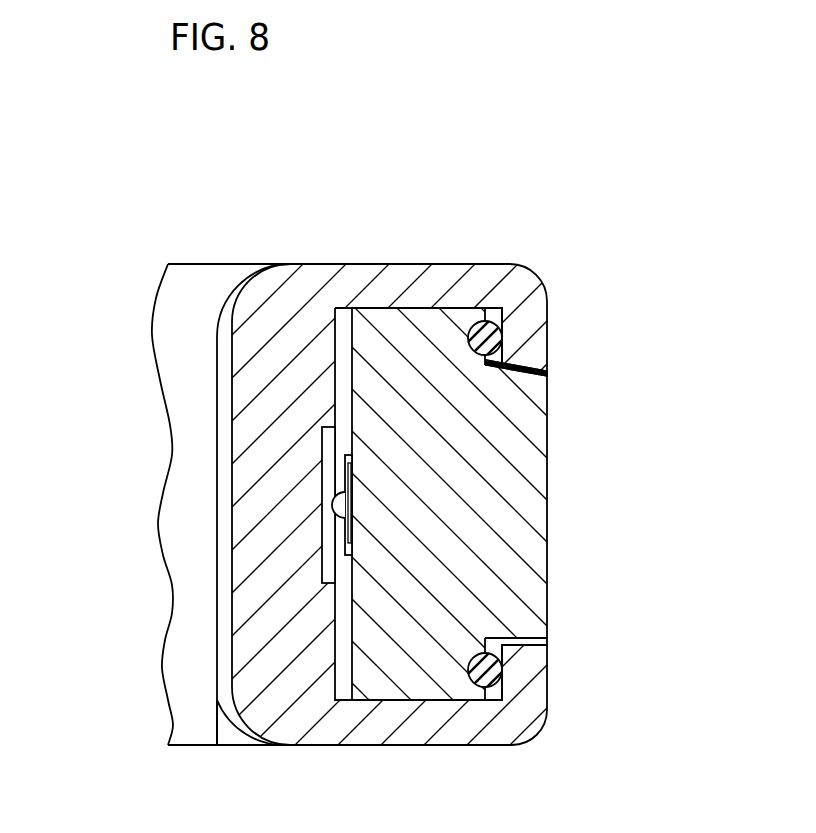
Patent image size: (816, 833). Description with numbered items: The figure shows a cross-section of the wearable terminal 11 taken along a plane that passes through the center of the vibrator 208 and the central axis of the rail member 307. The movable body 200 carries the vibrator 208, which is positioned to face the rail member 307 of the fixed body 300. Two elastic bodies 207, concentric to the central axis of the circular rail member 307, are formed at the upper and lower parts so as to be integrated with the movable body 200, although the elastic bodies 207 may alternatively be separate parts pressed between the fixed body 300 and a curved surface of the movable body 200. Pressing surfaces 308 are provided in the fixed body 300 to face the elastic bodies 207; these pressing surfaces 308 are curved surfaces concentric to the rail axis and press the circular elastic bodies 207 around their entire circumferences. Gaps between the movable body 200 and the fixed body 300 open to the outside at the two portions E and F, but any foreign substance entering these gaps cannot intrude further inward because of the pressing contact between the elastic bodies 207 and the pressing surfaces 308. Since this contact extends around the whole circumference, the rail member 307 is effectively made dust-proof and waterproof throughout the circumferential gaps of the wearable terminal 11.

The wearable terminal 11 is at (270, 233).
The fixed body 300 is at (207, 441).
The movable body 200 is at (556, 455).
The rail member 307 is at (322, 543).
The vibrator 208 is at (352, 507).
The pressing surface 308 is at (499, 328).
The elastic body 207 is at (496, 342).
The portion E is at (547, 375).
The portion F is at (548, 640).